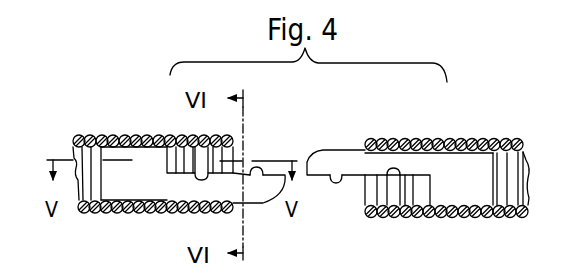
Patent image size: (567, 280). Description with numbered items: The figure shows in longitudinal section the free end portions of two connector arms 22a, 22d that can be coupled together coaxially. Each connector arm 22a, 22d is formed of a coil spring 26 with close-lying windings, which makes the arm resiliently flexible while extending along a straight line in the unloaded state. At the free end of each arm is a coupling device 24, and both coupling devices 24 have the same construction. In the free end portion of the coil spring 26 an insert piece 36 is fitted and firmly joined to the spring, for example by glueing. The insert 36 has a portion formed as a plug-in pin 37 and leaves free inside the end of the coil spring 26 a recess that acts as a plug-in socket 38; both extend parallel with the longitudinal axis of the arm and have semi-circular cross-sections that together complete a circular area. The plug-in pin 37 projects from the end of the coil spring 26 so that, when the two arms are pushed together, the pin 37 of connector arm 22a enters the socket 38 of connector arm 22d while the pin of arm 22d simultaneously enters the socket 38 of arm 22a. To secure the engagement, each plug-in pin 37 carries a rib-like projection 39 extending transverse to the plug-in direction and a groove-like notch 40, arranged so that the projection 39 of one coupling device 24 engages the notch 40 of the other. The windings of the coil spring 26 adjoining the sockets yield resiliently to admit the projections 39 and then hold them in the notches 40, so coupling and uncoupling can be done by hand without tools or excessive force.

The connector arm 22a is at (121, 124).
The connector arm 22d is at (480, 127).
The coupling device 24 is at (320, 139).
The coil spring 26 is at (100, 212).
The insert piece 36 is at (135, 162).
The plug-in pin 37 is at (262, 188).
The plug-in socket 38 is at (231, 152).
The projection 39 is at (258, 166).
The notch 40 is at (195, 180).